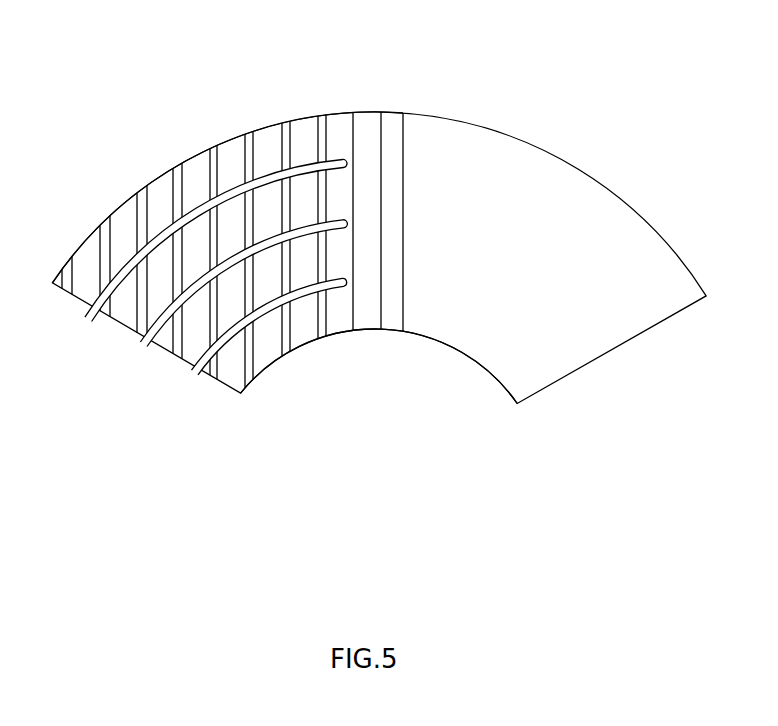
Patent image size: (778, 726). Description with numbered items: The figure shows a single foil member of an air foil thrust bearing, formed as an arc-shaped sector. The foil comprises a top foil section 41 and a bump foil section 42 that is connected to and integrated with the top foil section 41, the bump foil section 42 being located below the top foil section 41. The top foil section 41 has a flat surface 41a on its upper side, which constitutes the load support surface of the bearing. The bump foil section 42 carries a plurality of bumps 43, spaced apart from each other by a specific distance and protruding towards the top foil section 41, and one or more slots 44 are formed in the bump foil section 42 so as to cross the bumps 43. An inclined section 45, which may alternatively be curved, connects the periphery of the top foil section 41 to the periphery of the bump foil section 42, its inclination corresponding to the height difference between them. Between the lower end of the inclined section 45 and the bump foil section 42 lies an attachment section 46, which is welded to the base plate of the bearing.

The top foil section 41 is at (568, 146).
The flat surface 41a is at (502, 370).
The bump foil section 42 is at (186, 151).
The bumps 43 is at (233, 376).
The slots 44 is at (203, 371).
The inclined section 45 is at (392, 125).
The attachment section 46 is at (368, 127).